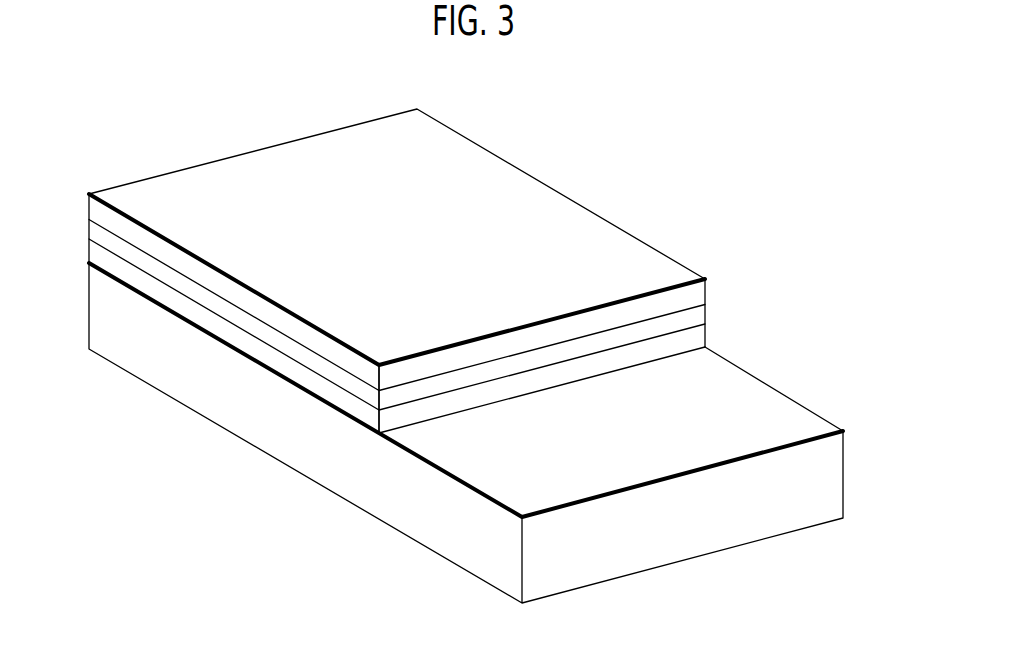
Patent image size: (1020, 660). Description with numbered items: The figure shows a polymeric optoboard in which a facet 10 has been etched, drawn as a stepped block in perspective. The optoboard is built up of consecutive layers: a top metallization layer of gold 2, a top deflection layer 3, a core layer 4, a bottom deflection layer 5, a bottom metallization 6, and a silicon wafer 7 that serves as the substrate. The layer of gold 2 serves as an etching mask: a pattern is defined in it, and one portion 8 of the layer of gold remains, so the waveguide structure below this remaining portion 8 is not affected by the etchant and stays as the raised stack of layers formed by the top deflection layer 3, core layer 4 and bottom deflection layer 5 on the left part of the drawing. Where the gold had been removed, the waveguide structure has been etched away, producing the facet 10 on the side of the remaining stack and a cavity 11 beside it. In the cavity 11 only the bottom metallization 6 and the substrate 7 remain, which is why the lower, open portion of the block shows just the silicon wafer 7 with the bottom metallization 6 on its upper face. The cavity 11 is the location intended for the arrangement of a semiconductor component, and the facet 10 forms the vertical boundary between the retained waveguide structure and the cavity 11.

The top metallization layer of gold 2 is at (89, 197).
The top deflection layer 3 is at (697, 290).
The core layer 4 is at (95, 233).
The bottom deflection layer 5 is at (692, 336).
The bottom metallization 6 is at (104, 273).
The silicon wafer 7 is at (825, 469).
The remaining portion of the layer of gold 8 is at (128, 172).
The facet 10 is at (432, 392).
The cavity 11 is at (773, 421).